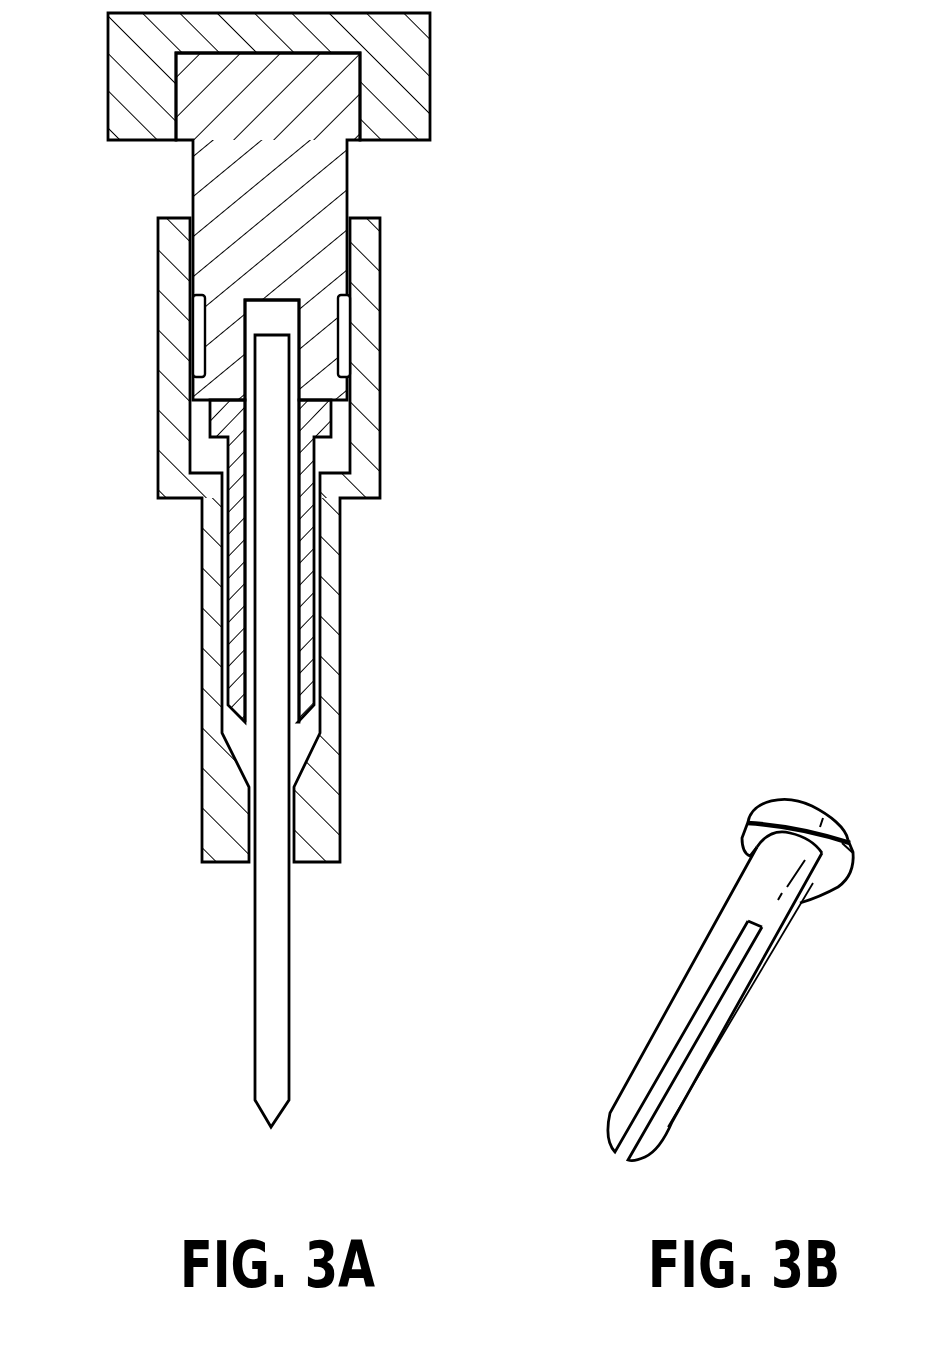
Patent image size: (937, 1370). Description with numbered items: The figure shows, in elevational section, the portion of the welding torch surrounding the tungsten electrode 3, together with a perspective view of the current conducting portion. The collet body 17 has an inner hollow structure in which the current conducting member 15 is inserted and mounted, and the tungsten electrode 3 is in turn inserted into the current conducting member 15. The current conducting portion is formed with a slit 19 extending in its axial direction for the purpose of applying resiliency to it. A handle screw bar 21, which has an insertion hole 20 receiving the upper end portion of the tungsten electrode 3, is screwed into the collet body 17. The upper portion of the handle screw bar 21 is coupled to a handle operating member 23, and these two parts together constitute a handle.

In FIG. 3A, the tungsten electrode 3 is at (277, 970).
In FIG. 3A, the current conducting member 15 is at (310, 677).
In FIG. 3B, the current conducting member 15 is at (773, 917).
In FIG. 3A, the collet body 17 is at (381, 318).
In FIG. 3B, the slit 19 is at (673, 1070).
In FIG. 3A, the insertion hole 20 is at (252, 313).
In FIG. 3A, the handle screw bar 21 is at (332, 184).
In FIG. 3A, the handle operating member 23 is at (420, 65).